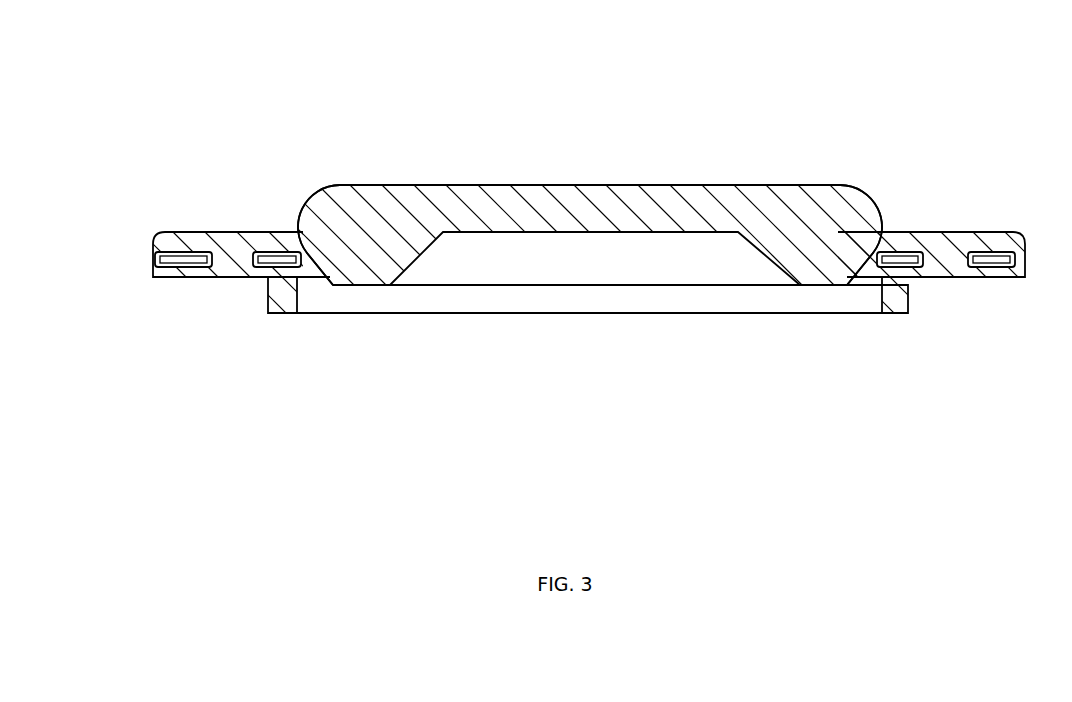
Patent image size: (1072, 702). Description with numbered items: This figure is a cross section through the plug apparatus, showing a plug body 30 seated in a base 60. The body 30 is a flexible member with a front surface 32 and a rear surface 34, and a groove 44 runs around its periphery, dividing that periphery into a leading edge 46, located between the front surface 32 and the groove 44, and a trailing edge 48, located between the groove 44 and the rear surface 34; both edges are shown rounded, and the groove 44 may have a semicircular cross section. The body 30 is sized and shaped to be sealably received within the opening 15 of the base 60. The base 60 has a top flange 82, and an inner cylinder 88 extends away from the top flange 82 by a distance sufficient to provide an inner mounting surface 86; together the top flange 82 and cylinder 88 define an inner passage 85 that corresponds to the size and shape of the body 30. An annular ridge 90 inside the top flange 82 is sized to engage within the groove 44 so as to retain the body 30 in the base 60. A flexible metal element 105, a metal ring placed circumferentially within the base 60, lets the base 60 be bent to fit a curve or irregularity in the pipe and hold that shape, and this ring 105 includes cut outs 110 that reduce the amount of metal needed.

The plug body 30 is at (603, 185).
The front surface 32 is at (697, 185).
The annular ridge 90 is at (340, 258).
The leading edge 46 is at (870, 220).
The rear surface 34 is at (678, 240).
The top flange 82 is at (190, 242).
The inner mounting surface 86 is at (190, 278).
The flexible metal element 105 is at (170, 260).
The inner cylinder 88 is at (285, 313).
The opening 15 is at (492, 260).
The inner passage 85 is at (565, 258).
The base 60 is at (960, 240).
The groove 44 is at (828, 240).
The trailing edge 48 is at (832, 262).
The cut outs 110 is at (942, 258).